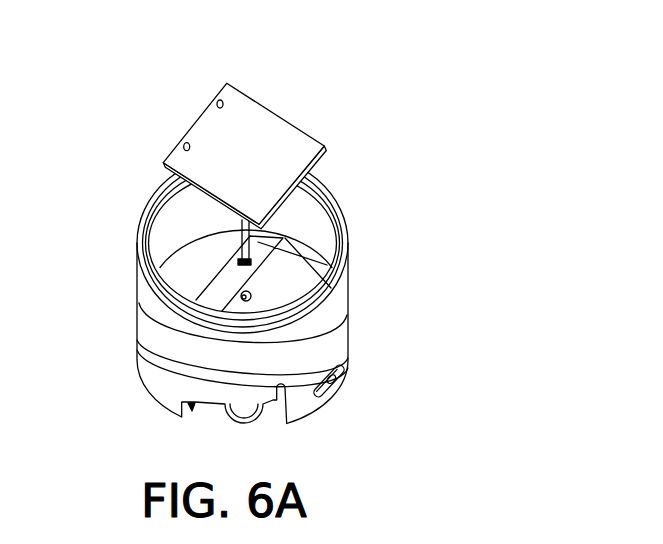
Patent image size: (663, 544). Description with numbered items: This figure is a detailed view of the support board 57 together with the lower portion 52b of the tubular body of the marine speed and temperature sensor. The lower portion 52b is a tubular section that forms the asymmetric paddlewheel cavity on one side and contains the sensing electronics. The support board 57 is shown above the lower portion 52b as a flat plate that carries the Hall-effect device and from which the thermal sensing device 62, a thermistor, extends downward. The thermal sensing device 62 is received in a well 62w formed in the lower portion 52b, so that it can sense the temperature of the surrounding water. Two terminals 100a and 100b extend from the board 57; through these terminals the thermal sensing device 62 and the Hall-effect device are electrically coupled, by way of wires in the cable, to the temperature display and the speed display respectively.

The lower portion of the tubular body 52b is at (340, 256).
The support board 57 is at (265, 115).
The thermal sensing device 62 is at (239, 263).
The well 62w is at (256, 298).
The terminal 100a is at (217, 98).
The terminal 100b is at (184, 139).